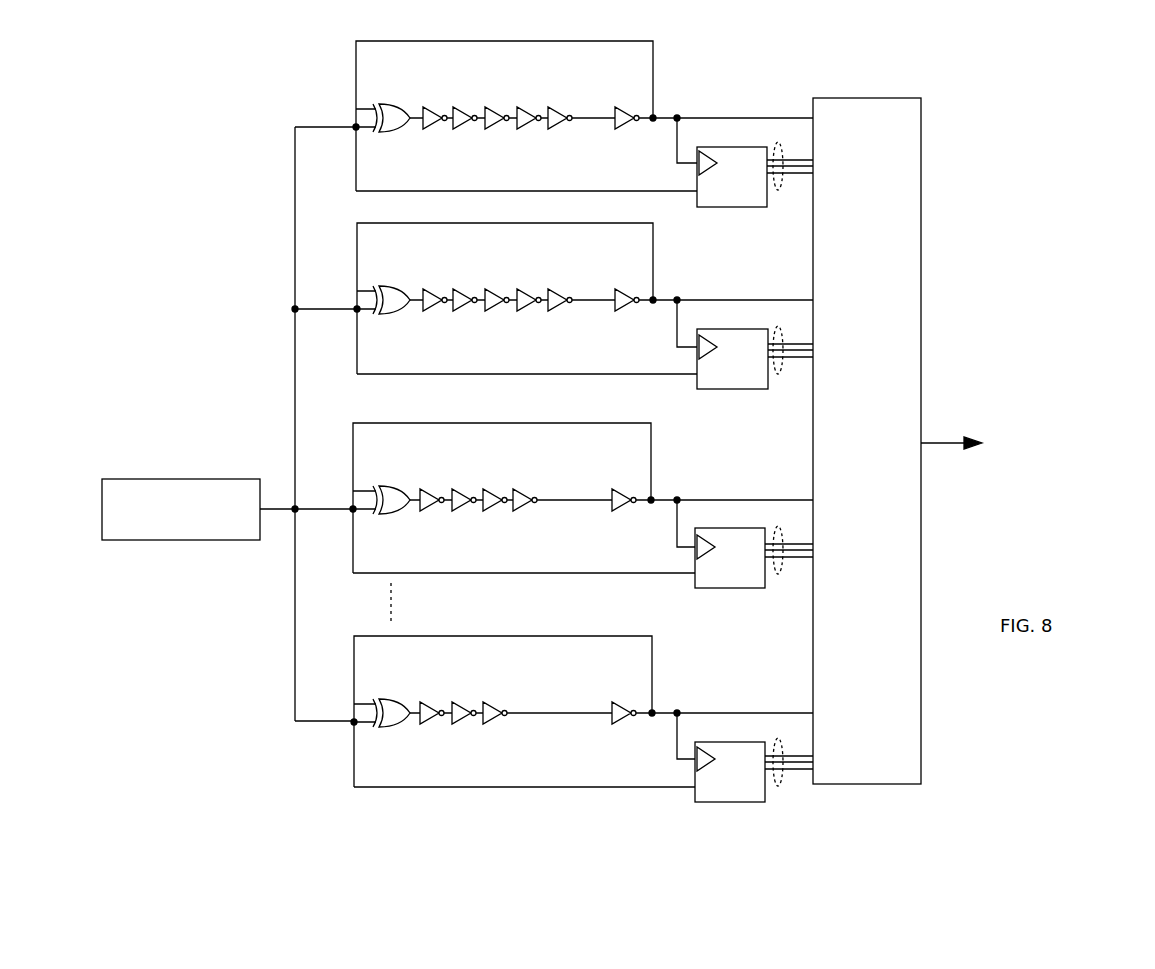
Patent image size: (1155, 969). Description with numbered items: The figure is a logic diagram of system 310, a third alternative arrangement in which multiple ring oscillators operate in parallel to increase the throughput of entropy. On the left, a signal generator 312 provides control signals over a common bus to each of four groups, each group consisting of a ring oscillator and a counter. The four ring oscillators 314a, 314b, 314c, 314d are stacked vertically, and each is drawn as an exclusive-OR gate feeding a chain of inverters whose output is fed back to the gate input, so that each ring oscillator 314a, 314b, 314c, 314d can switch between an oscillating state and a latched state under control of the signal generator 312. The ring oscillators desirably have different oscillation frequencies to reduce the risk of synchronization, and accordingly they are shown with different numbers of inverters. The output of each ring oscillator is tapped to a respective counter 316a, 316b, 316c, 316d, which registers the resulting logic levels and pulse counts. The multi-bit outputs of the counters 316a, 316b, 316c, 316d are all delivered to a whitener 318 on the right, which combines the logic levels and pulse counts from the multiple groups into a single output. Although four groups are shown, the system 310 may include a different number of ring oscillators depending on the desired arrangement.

The system 310 is at (195, 198).
The signal generator 312 is at (140, 479).
The ring oscillator 314a is at (662, 61).
The ring oscillator 314b is at (658, 282).
The ring oscillator 314c is at (655, 482).
The ring oscillator 314d is at (657, 693).
The counter 316a is at (718, 207).
The counter 316b is at (715, 389).
The counter 316c is at (703, 588).
The counter 316d is at (702, 802).
The whitener 318 is at (845, 98).